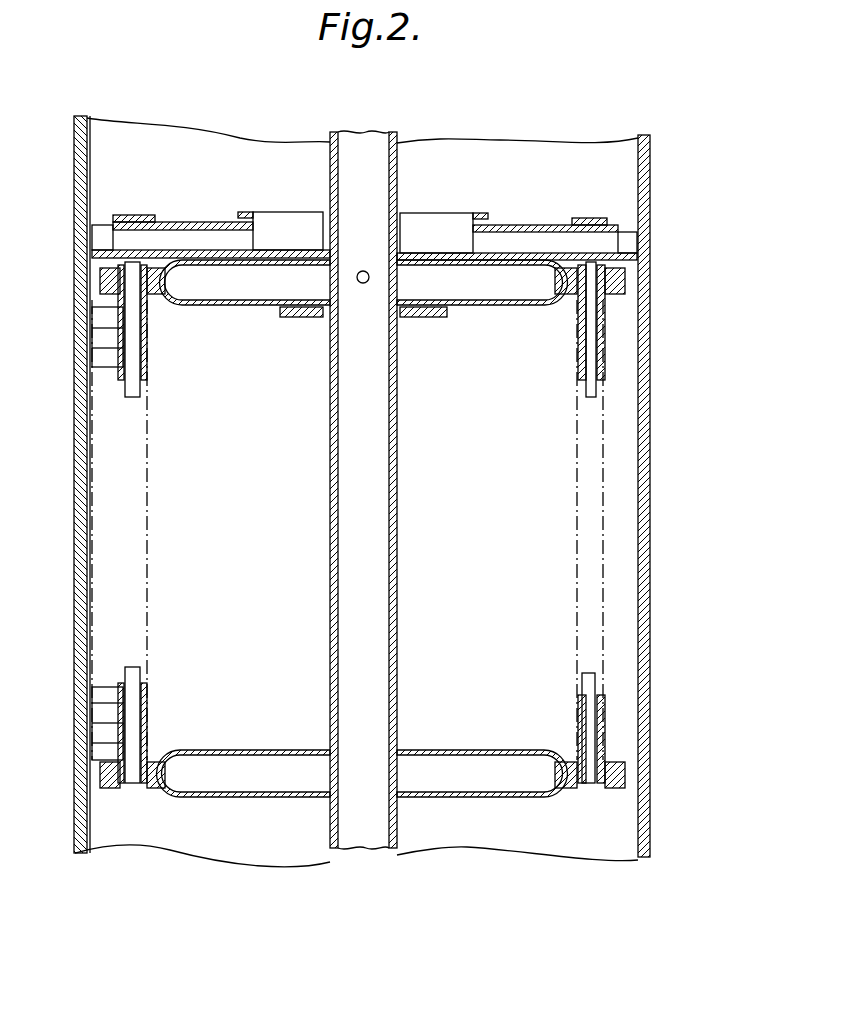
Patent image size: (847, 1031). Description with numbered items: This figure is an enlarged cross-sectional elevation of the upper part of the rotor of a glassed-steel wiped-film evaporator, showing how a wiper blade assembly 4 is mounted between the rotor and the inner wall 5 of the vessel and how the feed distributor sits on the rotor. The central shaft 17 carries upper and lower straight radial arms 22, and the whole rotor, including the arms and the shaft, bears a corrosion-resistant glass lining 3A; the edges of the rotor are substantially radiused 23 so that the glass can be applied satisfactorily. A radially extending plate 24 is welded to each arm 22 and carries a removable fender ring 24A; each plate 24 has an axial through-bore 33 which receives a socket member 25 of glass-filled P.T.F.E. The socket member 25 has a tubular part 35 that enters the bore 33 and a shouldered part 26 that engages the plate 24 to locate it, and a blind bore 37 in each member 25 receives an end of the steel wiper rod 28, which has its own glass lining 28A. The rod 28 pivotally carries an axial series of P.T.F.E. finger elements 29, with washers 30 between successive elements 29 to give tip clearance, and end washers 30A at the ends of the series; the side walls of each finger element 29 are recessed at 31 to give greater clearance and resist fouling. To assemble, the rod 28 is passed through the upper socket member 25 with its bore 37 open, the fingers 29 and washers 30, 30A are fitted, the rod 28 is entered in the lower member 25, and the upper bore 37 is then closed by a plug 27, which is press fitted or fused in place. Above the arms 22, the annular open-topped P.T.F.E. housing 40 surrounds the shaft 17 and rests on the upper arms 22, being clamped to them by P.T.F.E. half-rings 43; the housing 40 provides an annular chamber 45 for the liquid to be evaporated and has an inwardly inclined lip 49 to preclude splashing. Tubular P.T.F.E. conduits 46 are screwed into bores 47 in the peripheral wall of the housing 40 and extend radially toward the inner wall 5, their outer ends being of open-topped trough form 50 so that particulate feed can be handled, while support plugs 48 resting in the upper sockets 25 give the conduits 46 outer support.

The glass lining 3A is at (296, 318).
The wiper blade assembly 4 is at (162, 395).
The inner wall 5 is at (72, 535).
The shaft 17 is at (378, 446).
The radial arm 22 is at (272, 305).
The radiused edge 23 is at (148, 752).
The radially extending plate 24 is at (92, 372).
The fender ring 24A is at (612, 300).
The socket member 25 is at (110, 272).
The shouldered part 26 is at (160, 300).
The plug 27 is at (93, 254).
The wiper rod 28 is at (148, 400).
The glass lining 28A is at (150, 385).
The finger element 29 is at (95, 330).
The washer 30 is at (165, 312).
The end washer 30A is at (576, 320).
The recess 31 is at (120, 380).
The through-bore 33 is at (150, 282).
The tubular part 35 is at (112, 290).
The blind bore 37 is at (185, 268).
The housing 40 is at (288, 238).
The half-ring 43 is at (424, 318).
The annular chamber 45 is at (300, 235).
The tubular conduit 46 is at (195, 222).
The bore 47 is at (250, 212).
The support plug 48 is at (125, 215).
The inwardly inclined lip 49 is at (258, 212).
The open-topped trough 50 is at (100, 238).